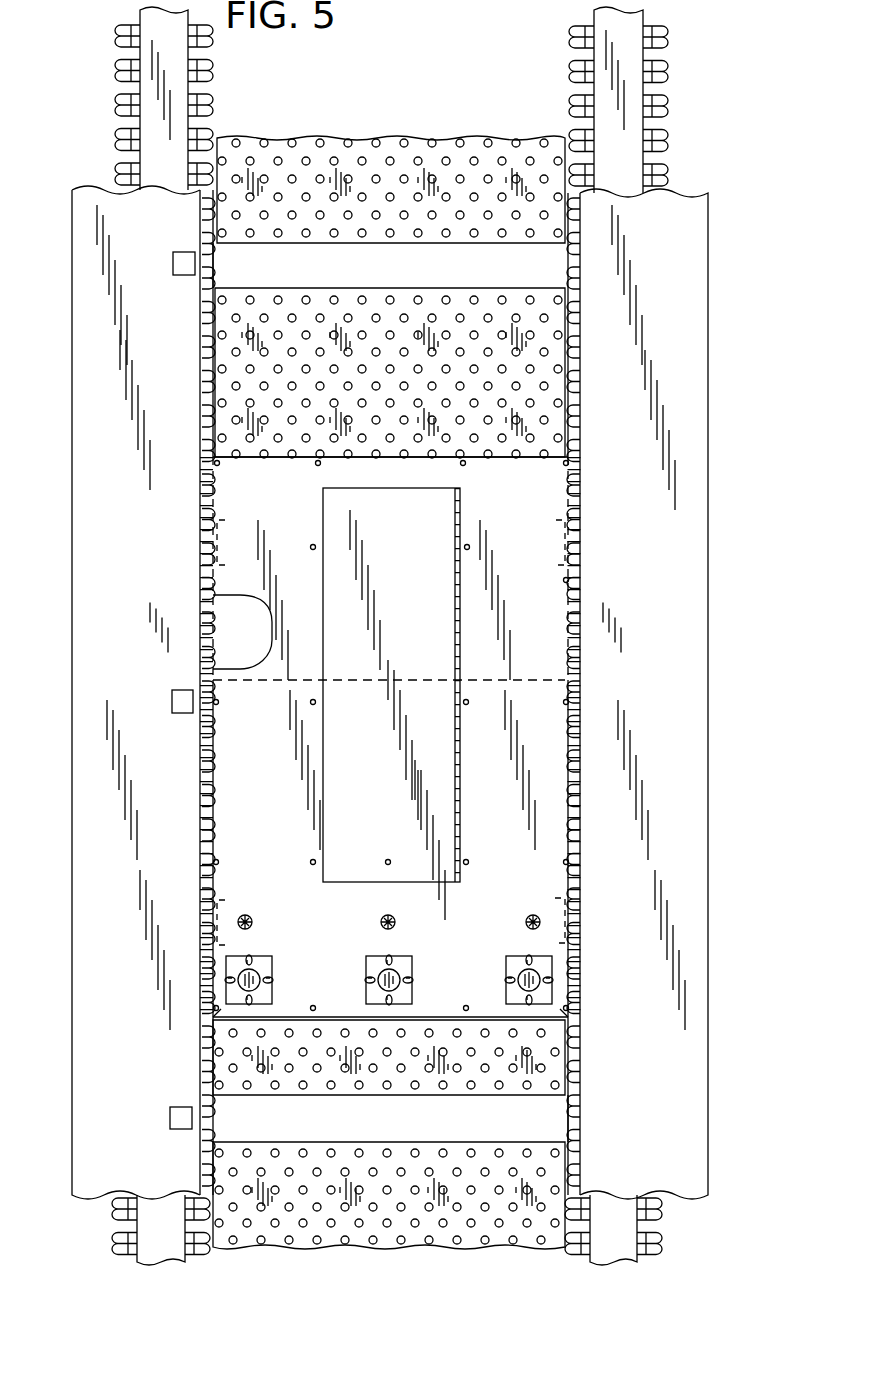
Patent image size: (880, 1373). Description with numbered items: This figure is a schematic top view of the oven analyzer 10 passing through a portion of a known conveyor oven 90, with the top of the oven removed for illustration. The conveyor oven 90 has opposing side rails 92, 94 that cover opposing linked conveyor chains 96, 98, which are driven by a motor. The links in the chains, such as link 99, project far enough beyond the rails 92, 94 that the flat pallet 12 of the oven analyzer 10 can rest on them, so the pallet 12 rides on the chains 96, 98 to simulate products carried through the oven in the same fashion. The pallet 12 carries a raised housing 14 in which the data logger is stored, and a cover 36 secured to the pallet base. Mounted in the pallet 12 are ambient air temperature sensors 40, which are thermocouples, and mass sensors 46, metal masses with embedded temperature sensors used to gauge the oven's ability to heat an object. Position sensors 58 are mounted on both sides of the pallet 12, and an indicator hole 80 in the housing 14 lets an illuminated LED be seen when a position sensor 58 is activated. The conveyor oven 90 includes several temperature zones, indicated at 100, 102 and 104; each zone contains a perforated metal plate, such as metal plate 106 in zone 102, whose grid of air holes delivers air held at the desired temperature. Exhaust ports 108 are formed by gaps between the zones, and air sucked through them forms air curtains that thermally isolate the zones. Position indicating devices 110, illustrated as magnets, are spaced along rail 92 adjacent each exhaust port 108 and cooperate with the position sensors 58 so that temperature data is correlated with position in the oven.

The oven analyzer 10 is at (553, 632).
The pallet 12 is at (235, 626).
The housing 14 is at (396, 530).
The cover 36 is at (250, 748).
The ambient air temperature sensors 40 is at (247, 914).
The mass sensors 46 is at (262, 969).
The position sensors 58 is at (222, 527).
The indicator hole 80 is at (386, 860).
The conveyor oven 90 is at (700, 170).
The side rail 92 is at (90, 432).
The side rail 94 is at (690, 410).
The linked conveyor chain 96 is at (208, 70).
The linked conveyor chain 98 is at (658, 42).
The link 99 is at (578, 216).
The temperature zone 100 is at (303, 1236).
The temperature zone 102 is at (237, 355).
The temperature zone 104 is at (362, 142).
The perforated metal plate 106 is at (545, 330).
The exhaust ports 108 is at (538, 270).
The position indicating devices 110 is at (173, 263).